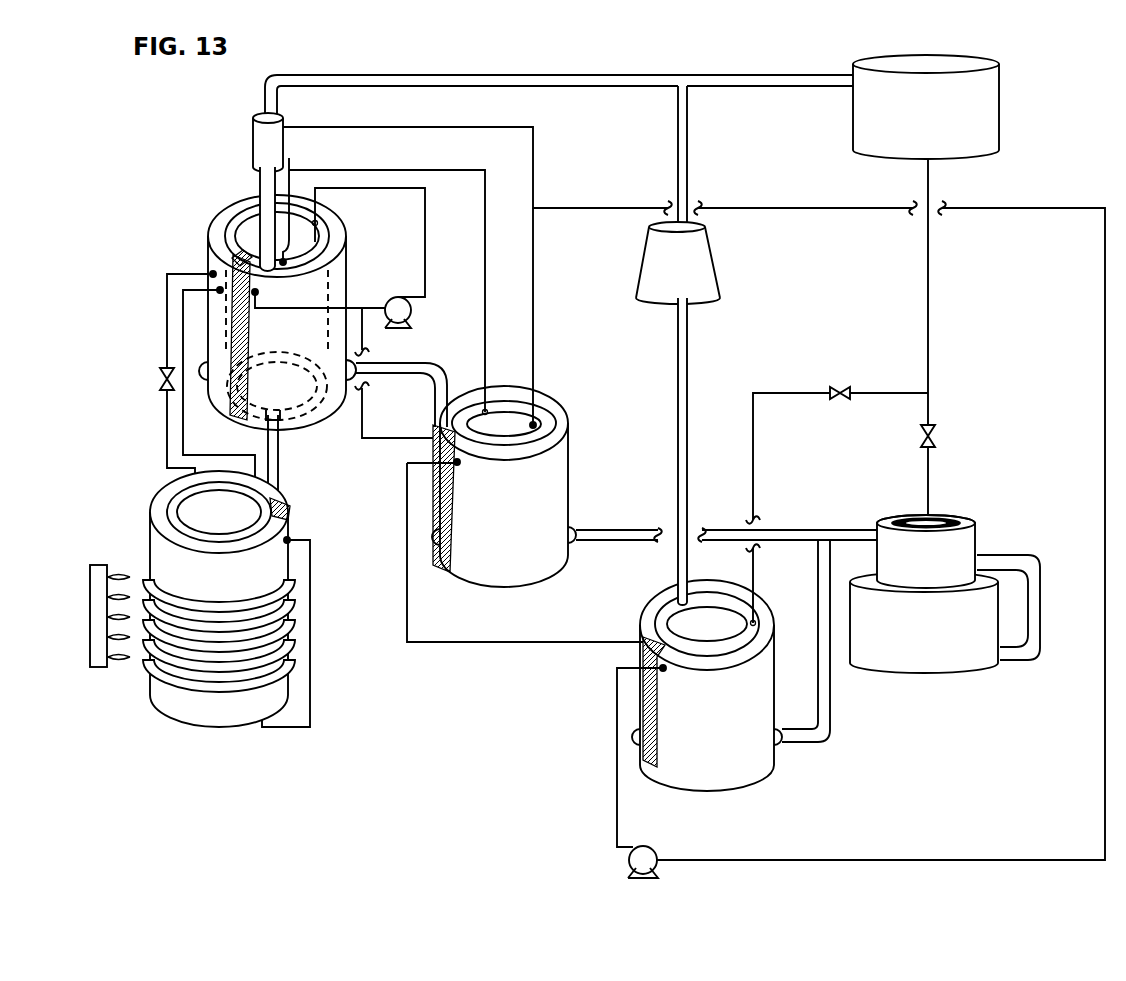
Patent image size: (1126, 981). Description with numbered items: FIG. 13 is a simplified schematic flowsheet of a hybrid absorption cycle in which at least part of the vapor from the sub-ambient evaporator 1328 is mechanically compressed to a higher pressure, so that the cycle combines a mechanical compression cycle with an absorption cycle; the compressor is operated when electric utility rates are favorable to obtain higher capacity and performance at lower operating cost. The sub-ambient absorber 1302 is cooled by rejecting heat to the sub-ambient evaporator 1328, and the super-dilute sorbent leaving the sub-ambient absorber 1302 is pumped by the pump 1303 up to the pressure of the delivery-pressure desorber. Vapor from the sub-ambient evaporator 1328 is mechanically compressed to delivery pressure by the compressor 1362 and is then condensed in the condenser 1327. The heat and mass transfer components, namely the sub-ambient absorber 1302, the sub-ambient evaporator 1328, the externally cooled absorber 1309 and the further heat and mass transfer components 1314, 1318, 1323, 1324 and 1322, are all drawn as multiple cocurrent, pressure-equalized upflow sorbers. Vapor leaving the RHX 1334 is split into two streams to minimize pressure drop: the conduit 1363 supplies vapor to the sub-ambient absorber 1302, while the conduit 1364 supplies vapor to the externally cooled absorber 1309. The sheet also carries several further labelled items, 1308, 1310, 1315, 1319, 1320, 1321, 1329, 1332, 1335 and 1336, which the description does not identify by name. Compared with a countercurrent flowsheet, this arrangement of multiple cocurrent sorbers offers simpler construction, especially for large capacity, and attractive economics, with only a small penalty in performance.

The sub-ambient absorber 1302 is at (765, 612).
The pump 1303 is at (663, 866).
The inner ring of second vessel 1308 is at (471, 424).
The externally cooled absorber 1309 is at (492, 386).
The second vessel 1310 is at (539, 411).
The heat and mass transfer component 1314 is at (340, 256).
The pump 1315 is at (411, 321).
The heat and mass transfer component 1318 is at (212, 222).
The valve 1319 is at (157, 378).
The heated vessel 1320 is at (233, 496).
The heater 1321 is at (98, 668).
The heat and mass transfer component 1322 is at (150, 556).
The heat and mass transfer component 1323 is at (248, 207).
The heat and mass transfer component 1324 is at (336, 229).
The condenser 1327 is at (852, 104).
The sub-ambient evaporator 1328 is at (686, 614).
The valve 1329 is at (840, 383).
The inlet fitting 1332 is at (285, 139).
The RHX 1334 is at (894, 520).
The valve 1335 is at (937, 444).
The large cylinder 1336 is at (930, 674).
The compressor 1362 is at (718, 258).
The conduit 1363 is at (834, 700).
The conduit 1364 is at (776, 529).